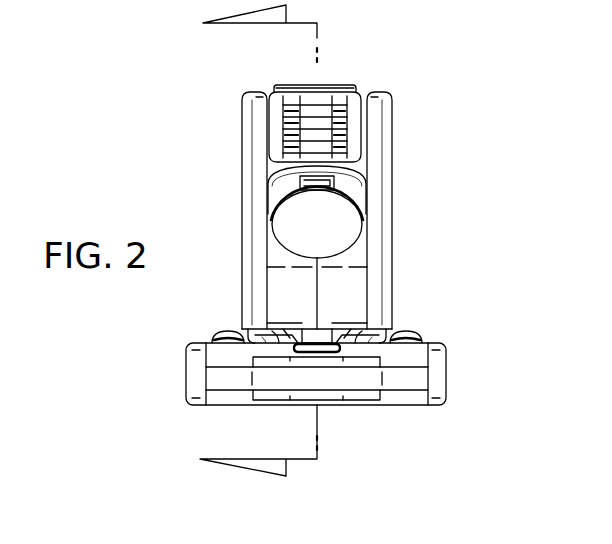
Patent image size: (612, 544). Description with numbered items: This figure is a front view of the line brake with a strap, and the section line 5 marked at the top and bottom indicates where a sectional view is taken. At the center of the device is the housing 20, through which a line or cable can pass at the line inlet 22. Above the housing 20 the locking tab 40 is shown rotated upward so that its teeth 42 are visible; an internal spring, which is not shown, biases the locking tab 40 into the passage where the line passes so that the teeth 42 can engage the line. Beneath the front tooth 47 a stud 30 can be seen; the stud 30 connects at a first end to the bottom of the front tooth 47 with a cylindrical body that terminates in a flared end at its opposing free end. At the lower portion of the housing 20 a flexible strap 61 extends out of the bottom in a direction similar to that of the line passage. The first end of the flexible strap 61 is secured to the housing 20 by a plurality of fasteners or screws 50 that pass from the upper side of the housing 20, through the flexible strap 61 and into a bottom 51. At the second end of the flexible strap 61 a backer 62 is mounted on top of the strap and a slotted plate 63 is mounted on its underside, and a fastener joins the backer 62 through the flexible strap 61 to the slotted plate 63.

The section line 5- 5 is at (245, 244).
The housing 20 is at (452, 186).
The line inlet 22 is at (326, 241).
The stud 30 is at (333, 328).
The locking tab 40 is at (296, 86).
The teeth 42 is at (352, 118).
The front tooth 47 is at (276, 327).
The fasteners or screws 50 is at (230, 333).
The bottom 51 is at (413, 405).
The flexible strap 61 is at (405, 388).
The backer 62 is at (386, 355).
The slotted plate 63 is at (283, 403).